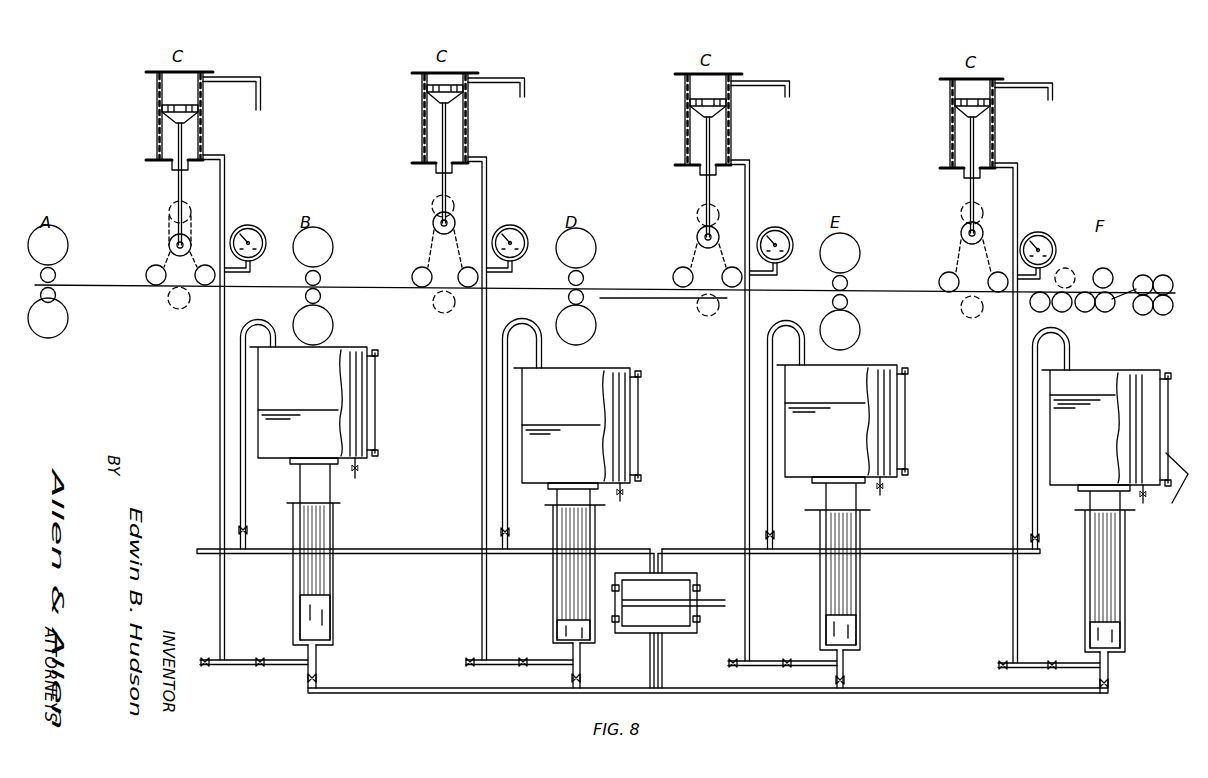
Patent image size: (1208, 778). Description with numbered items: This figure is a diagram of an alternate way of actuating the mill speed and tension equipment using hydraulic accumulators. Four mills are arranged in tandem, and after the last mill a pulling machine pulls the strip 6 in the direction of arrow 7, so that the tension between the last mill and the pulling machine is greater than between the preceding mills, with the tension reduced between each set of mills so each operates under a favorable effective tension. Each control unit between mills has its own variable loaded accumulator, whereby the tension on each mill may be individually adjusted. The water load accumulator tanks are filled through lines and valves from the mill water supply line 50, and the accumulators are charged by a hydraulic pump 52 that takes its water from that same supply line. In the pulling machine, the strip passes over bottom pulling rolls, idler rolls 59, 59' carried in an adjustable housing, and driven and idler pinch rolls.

The rolling piece 6 is at (111, 284).
The arrow 7 is at (663, 311).
The mill water supply line 50 is at (410, 549).
The hydraulic pump 52 is at (668, 618).
The idler rolls 59 is at (1068, 267).
The roller 59' is at (1113, 267).